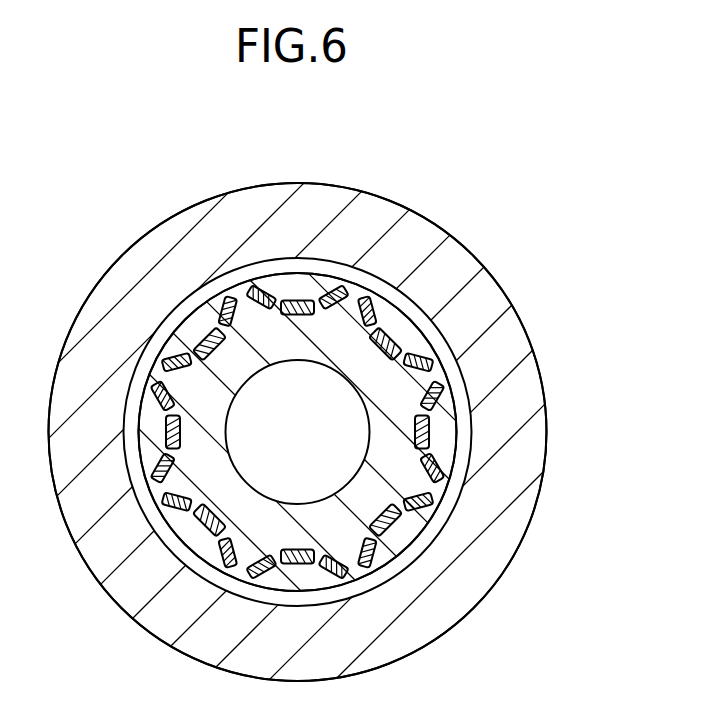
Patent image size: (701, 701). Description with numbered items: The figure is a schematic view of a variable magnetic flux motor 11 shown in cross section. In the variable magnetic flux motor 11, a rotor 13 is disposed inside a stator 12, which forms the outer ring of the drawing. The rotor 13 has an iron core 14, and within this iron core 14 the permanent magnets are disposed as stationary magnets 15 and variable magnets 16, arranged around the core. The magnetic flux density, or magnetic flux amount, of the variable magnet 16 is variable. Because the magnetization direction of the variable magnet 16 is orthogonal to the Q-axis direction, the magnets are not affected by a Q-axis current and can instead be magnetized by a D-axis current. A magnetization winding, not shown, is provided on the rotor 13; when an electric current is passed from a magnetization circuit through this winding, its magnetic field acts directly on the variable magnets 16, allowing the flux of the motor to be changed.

The variable magnetic flux motor 11 is at (483, 190).
The stator 12 is at (534, 516).
The rotor 13 is at (524, 242).
The iron core 14 is at (413, 342).
The stationary magnet 15 is at (440, 372).
The variable magnet 16 is at (430, 415).